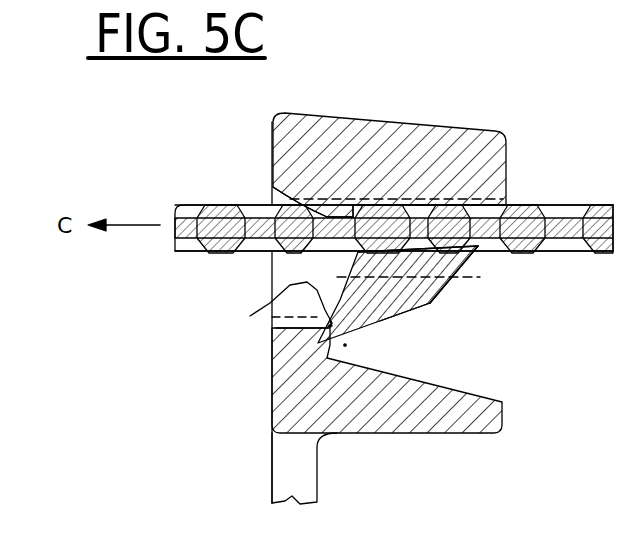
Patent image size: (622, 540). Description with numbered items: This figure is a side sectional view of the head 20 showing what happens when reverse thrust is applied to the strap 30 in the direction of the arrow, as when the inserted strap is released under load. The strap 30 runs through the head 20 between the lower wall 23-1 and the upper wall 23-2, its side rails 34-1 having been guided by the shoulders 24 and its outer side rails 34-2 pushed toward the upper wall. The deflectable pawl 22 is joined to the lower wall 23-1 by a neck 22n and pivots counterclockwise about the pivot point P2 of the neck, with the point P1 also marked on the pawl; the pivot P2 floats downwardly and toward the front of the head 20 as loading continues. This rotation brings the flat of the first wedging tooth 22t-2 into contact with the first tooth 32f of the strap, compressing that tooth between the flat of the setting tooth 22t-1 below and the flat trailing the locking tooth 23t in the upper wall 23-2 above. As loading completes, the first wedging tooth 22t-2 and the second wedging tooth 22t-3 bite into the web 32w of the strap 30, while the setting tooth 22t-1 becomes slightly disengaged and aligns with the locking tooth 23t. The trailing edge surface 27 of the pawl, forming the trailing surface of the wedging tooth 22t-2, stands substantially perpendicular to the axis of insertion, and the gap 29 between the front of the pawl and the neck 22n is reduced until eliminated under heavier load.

The head 20 is at (160, 484).
The pawl 22 is at (390, 294).
The setting tooth 22t-1 is at (250, 316).
The first wedging tooth 22t-2 is at (487, 277).
The second wedging tooth 22t-3 is at (472, 246).
The neck 22n is at (305, 344).
The lower wall 23-1 is at (452, 395).
The upper wall 23-2 is at (482, 182).
The locking tooth 23t is at (349, 205).
The shoulders 24 is at (487, 278).
The trailing edge surface 27 is at (450, 297).
The gap 29 is at (327, 323).
The strap 30 is at (394, 223).
The web 32w is at (337, 216).
The first tooth 32f is at (439, 205).
The side rails 34-1 is at (232, 253).
The outer side rails 34-2 is at (230, 203).
The pivot point P1 is at (345, 345).
The pivot point P2 is at (330, 326).